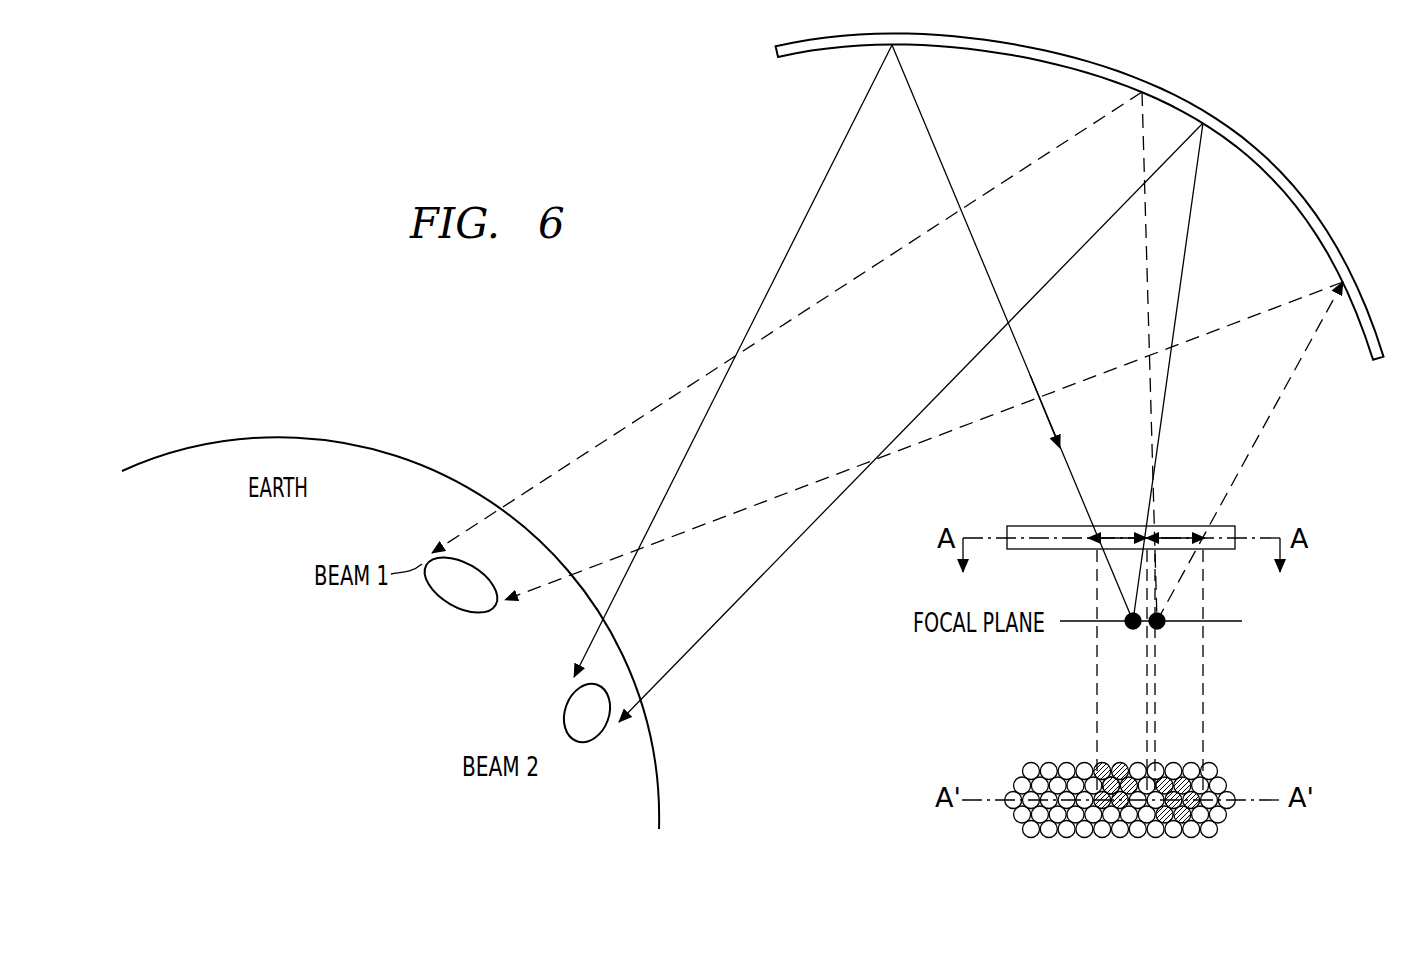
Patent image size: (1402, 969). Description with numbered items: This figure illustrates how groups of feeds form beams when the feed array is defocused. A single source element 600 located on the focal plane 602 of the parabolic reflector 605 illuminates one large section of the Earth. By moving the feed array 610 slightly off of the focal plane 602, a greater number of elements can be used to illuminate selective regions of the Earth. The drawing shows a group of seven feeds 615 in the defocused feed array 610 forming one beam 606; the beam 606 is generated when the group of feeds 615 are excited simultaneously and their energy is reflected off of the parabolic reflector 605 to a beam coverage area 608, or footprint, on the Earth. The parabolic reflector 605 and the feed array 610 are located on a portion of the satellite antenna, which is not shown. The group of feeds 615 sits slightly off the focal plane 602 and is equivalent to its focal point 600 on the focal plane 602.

The source element 600 is at (1132, 630).
The focal plane 602 is at (1220, 623).
The parabolic reflector 605 is at (1281, 166).
The beam 606 is at (1056, 449).
The beam coverage area 608 is at (567, 726).
The feed array 610 is at (1238, 786).
The group of feeds 615 is at (1112, 766).